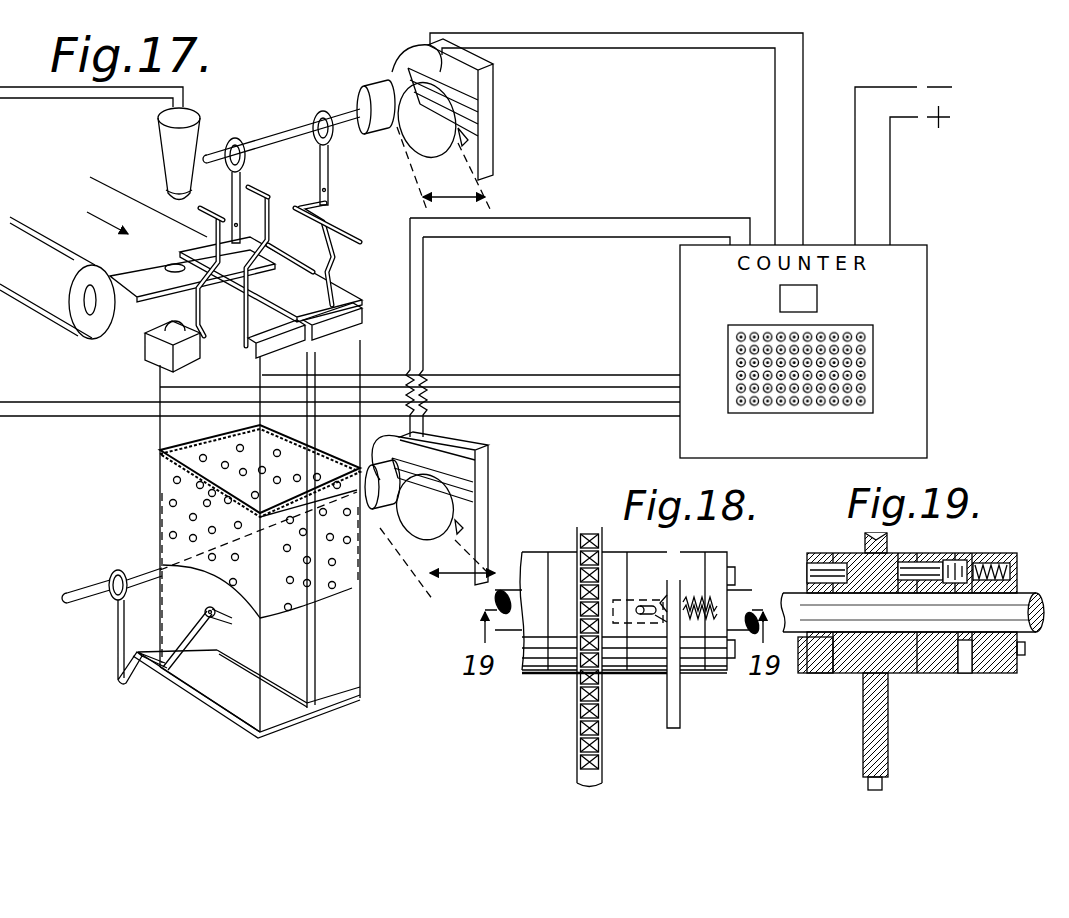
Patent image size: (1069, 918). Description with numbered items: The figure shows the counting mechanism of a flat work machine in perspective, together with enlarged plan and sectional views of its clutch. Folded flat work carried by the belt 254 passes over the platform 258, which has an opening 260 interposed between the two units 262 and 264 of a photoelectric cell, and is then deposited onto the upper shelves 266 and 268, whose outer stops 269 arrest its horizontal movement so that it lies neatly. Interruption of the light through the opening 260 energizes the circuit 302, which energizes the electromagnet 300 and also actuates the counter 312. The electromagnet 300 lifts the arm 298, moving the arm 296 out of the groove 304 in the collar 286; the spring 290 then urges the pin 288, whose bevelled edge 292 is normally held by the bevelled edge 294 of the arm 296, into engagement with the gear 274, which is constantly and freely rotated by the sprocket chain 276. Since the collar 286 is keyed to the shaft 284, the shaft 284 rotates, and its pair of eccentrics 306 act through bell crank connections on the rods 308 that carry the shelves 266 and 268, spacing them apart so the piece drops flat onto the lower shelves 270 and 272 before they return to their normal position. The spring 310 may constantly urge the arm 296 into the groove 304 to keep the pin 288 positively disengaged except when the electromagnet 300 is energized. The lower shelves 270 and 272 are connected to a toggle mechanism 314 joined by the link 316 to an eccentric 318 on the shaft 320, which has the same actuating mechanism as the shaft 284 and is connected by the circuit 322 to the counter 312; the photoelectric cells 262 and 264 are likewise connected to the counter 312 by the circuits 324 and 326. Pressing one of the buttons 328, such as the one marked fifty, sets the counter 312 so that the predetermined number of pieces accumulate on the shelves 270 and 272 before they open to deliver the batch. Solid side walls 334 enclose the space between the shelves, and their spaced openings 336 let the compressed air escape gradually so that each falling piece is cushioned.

In FIG. 17, the belt 254 is at (117, 207).
In FIG. 17, the platform 258 is at (148, 287).
In FIG. 17, the opening 260 is at (168, 265).
In FIG. 17, the photoelectric cell unit 262 is at (170, 152).
In FIG. 17, the photoelectric cell unit 264 is at (157, 338).
In FIG. 17, the shelf 266 is at (230, 333).
In FIG. 17, the shelf 268 is at (302, 298).
In FIG. 17, the outer stops 269 is at (353, 310).
In FIG. 17, the bottom shelf 270 is at (225, 690).
In FIG. 17, the bottom shelf 272 is at (337, 692).
In FIG. 17, the gear 274 is at (405, 77).
In FIG. 18, the gear 274 is at (577, 725).
In FIG. 19, the gear 274 is at (877, 753).
In FIG. 17, the sprocket chain 276 is at (437, 378).
In FIG. 17, the shaft 284 is at (287, 125).
In FIG. 18, the shaft 284 is at (508, 632).
In FIG. 19, the shaft 284 is at (912, 612).
In FIG. 17, the collar 286 is at (380, 95).
In FIG. 18, the collar 286 is at (530, 672).
In FIG. 19, the collar 286 is at (823, 543).
In FIG. 19, the pin 288 is at (840, 570).
In FIG. 19, the spring 290 is at (1000, 560).
In FIG. 18, the bevelled edge 292 is at (660, 612).
In FIG. 19, the bevelled edge 292 is at (960, 573).
In FIG. 18, the bevelled edge 294 is at (668, 680).
In FIG. 17, the arm 296 is at (460, 107).
In FIG. 18, the arm 296 is at (680, 728).
In FIG. 17, the arm 298 is at (495, 70).
In FIG. 17, the electromagnet 300 is at (423, 58).
In FIG. 17, the circuit 302 is at (693, 35).
In FIG. 18, the groove 304 is at (675, 562).
In FIG. 19, the groove 304 is at (963, 662).
In FIG. 17, the eccentrics 306 is at (247, 160).
In FIG. 17, the rods 308 is at (207, 213).
In FIG. 17, the spring 310 is at (467, 137).
In FIG. 17, the counter 312 is at (817, 300).
In FIG. 17, the toggle mechanism 314 is at (198, 630).
In FIG. 17, the link 316 is at (115, 650).
In FIG. 17, the eccentric 318 is at (110, 578).
In FIG. 17, the shaft 320 is at (140, 568).
In FIG. 17, the circuit 322 is at (618, 230).
In FIG. 17, the circuit 324 is at (533, 370).
In FIG. 17, the circuit 326 is at (588, 410).
In FIG. 17, the buttons 328 is at (790, 392).
In FIG. 17, the solid side walls 334 is at (172, 472).
In FIG. 17, the openings 336 is at (200, 485).